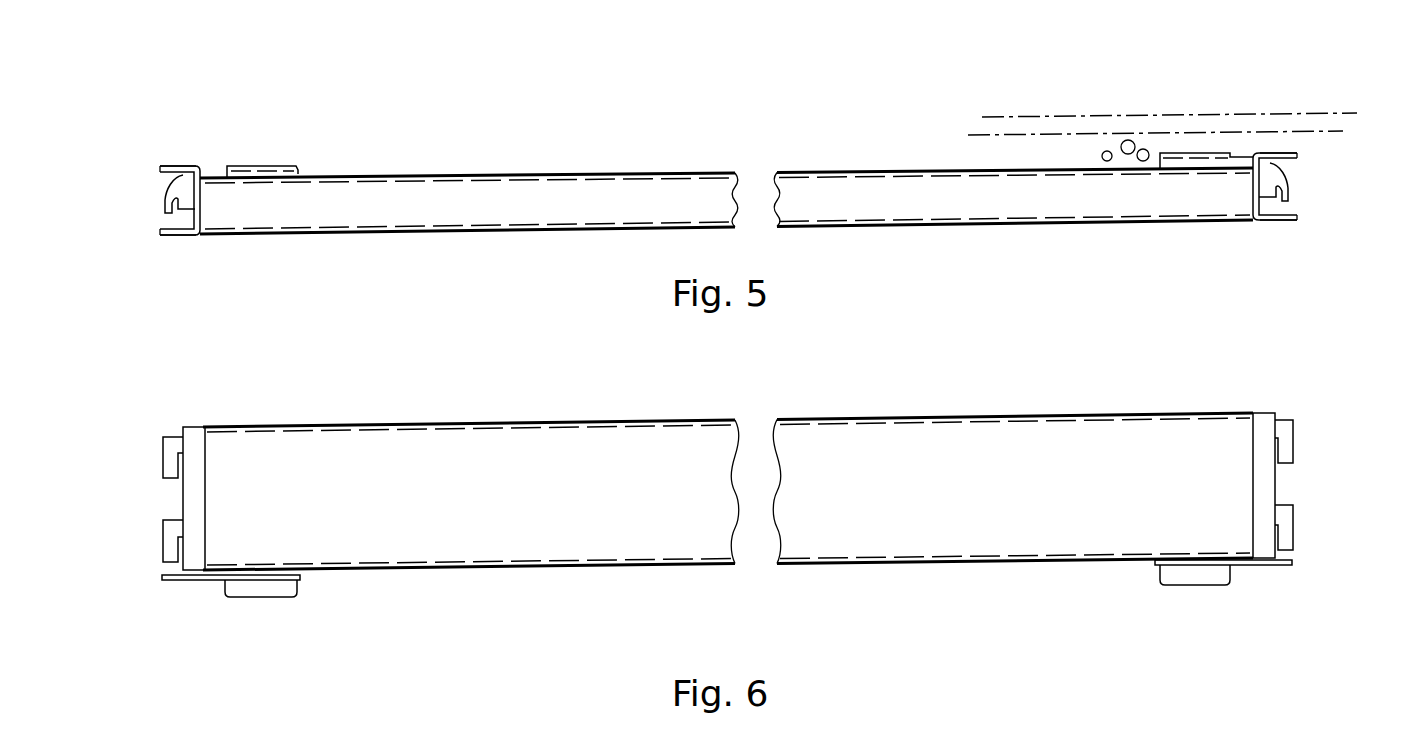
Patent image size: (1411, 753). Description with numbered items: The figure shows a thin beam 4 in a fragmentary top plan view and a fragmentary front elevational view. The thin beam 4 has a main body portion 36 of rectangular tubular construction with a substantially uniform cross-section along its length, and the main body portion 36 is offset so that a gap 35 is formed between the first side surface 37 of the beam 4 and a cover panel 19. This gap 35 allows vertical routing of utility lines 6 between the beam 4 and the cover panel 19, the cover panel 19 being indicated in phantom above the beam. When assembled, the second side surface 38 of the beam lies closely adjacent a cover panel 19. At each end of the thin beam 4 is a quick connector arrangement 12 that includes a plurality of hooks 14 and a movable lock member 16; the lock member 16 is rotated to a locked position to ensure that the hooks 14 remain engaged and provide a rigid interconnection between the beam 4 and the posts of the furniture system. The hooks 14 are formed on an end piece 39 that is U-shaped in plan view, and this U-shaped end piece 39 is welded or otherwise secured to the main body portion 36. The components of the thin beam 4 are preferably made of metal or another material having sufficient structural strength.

In FIG. 5, the thin beam 4 is at (521, 140).
In FIG. 6, the thin beam 4 is at (592, 395).
In FIG. 5, the utility lines 6 is at (1132, 141).
In FIG. 5, the quick connector arrangement 12 is at (1312, 233).
In FIG. 6, the quick connector arrangement 12 is at (133, 428).
In FIG. 5, the hooks 14 is at (167, 165).
In FIG. 6, the hooks 14 is at (158, 458).
In FIG. 5, the movable lock member 16 is at (163, 196).
In FIG. 6, the movable lock member 16 is at (230, 597).
In FIG. 5, the cover panel 19 is at (1083, 116).
In FIG. 5, the gap 35 is at (998, 155).
In FIG. 5, the main body portion 36 is at (633, 203).
In FIG. 6, the main body portion 36 is at (597, 517).
In FIG. 5, the first side surface 37 is at (670, 173).
In FIG. 5, the second side surface 38 is at (992, 224).
In FIG. 5, the end piece 39 is at (186, 166).
In FIG. 6, the end piece 39 is at (190, 427).